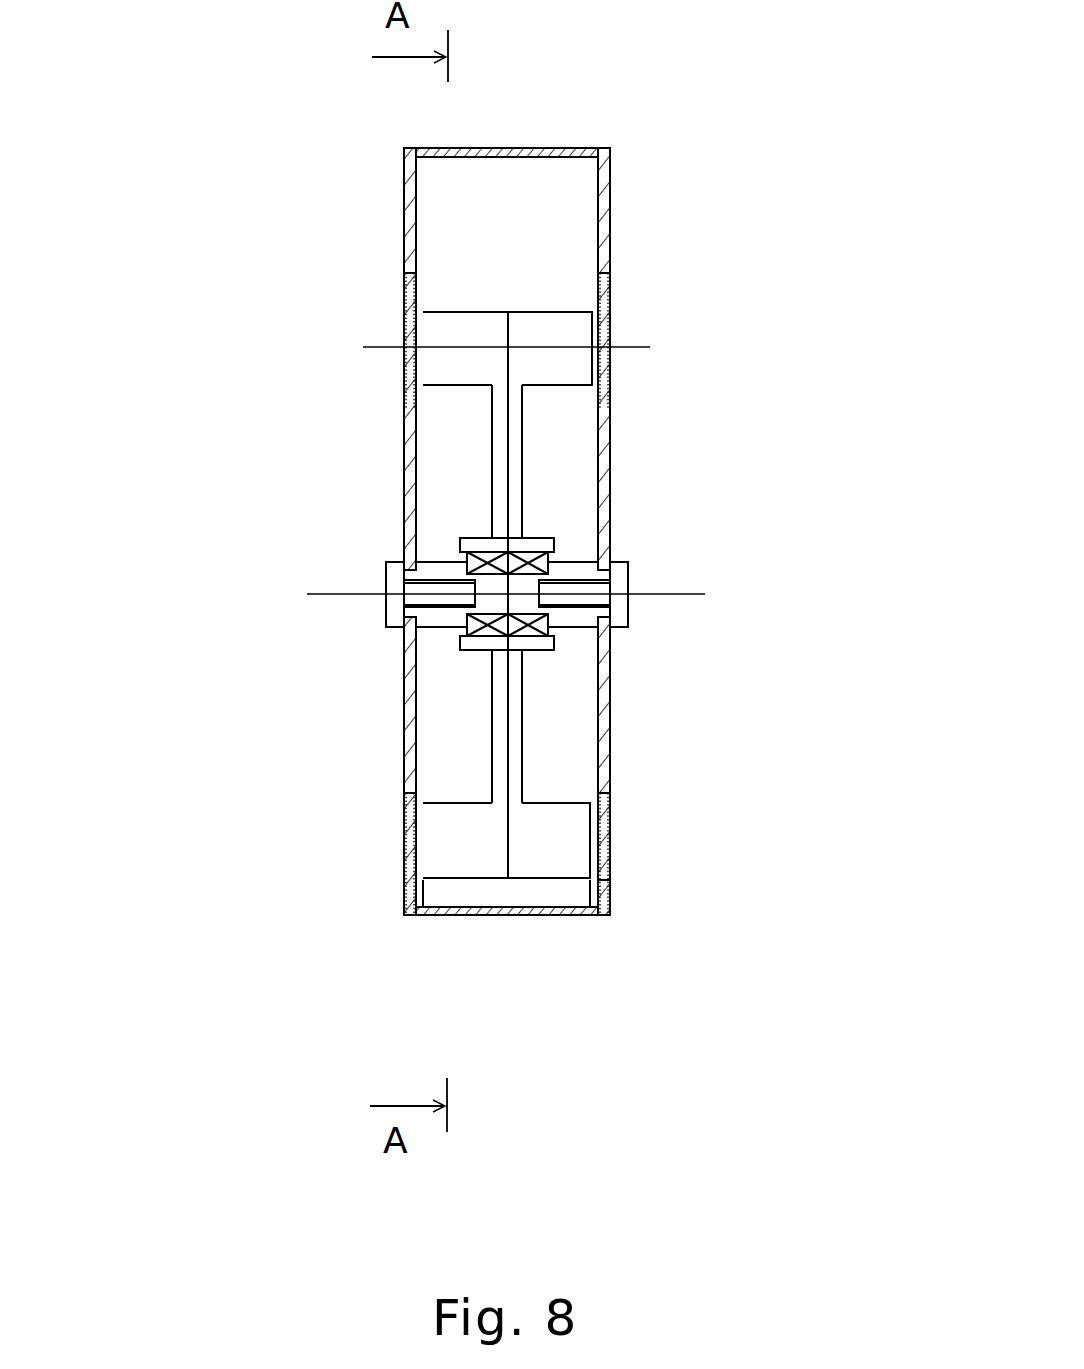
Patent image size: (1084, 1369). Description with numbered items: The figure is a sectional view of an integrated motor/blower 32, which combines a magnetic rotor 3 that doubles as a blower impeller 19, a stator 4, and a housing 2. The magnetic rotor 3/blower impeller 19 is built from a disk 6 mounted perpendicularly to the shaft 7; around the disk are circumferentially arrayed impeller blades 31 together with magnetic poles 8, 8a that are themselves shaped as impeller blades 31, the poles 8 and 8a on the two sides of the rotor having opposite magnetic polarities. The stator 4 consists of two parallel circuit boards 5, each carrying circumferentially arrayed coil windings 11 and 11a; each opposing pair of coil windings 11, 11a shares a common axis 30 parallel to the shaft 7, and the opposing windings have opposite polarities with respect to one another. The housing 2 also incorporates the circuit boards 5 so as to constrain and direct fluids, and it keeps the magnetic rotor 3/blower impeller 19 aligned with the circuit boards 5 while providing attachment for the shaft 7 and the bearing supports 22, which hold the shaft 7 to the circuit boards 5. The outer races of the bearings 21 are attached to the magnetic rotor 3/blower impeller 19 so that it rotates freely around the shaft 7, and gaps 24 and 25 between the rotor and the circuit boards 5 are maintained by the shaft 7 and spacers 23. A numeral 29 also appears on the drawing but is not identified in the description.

The housing 2 is at (412, 913).
The magnetic rotor 3 is at (507, 475).
The stator 4 is at (607, 765).
The circuit boards 5 is at (403, 303).
The disk 6 is at (507, 690).
The shaft 7 is at (587, 600).
The magnetic pole 8 is at (448, 338).
The magnetic pole 8a is at (563, 337).
The coil windings 11 is at (405, 379).
The coil windings 11a is at (608, 898).
The blower impeller 19 is at (538, 847).
The bearings 21 is at (508, 552).
The bearing supports 22 is at (508, 550).
The spacers 23 is at (563, 617).
The gap 24 is at (424, 889).
The gap 25 is at (589, 889).
The lower magnet south pole 29 is at (447, 860).
The common axis 30 is at (405, 348).
The impeller blades 31 is at (438, 815).
The integrated motor/blower 32 is at (231, 153).